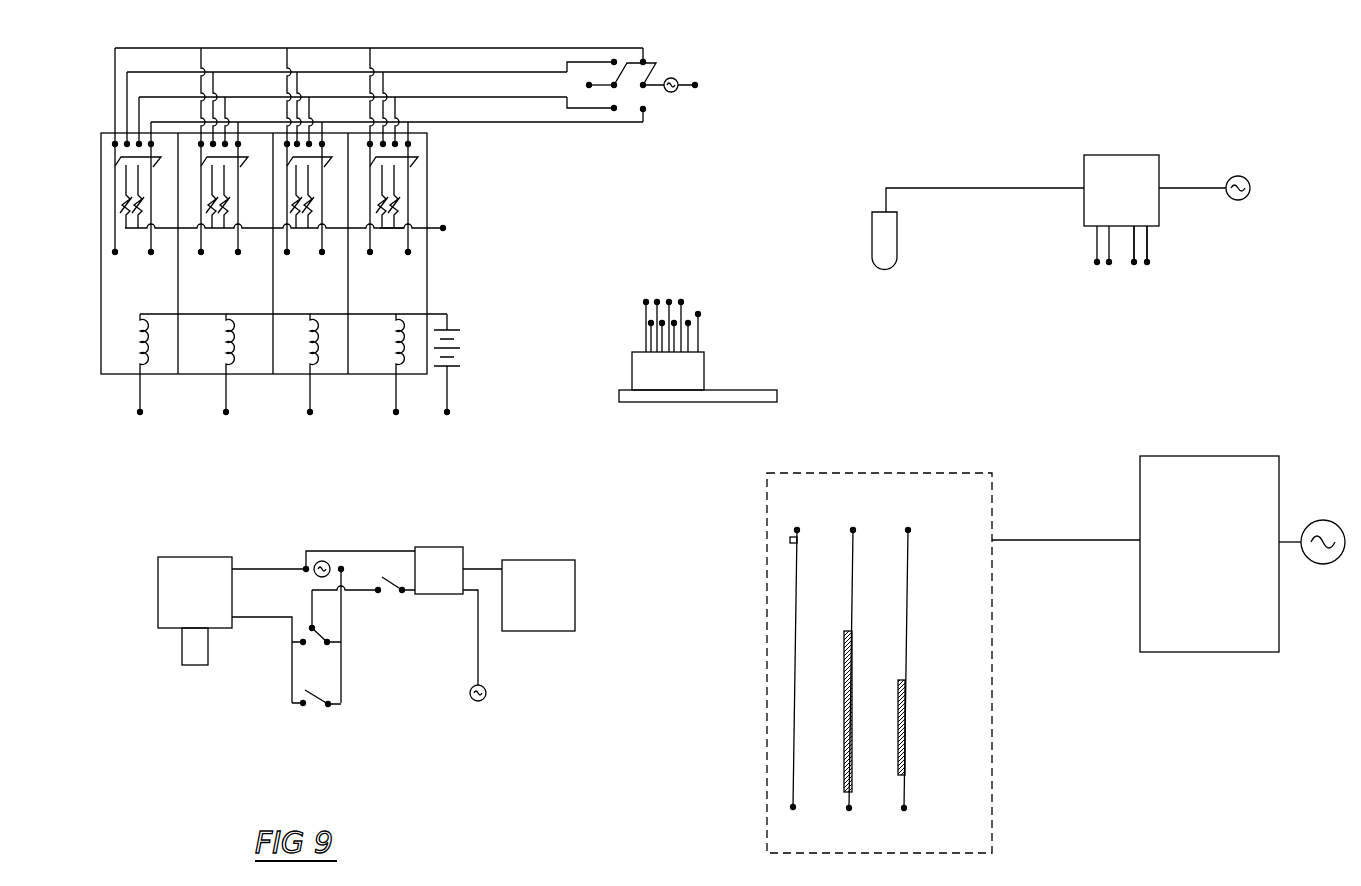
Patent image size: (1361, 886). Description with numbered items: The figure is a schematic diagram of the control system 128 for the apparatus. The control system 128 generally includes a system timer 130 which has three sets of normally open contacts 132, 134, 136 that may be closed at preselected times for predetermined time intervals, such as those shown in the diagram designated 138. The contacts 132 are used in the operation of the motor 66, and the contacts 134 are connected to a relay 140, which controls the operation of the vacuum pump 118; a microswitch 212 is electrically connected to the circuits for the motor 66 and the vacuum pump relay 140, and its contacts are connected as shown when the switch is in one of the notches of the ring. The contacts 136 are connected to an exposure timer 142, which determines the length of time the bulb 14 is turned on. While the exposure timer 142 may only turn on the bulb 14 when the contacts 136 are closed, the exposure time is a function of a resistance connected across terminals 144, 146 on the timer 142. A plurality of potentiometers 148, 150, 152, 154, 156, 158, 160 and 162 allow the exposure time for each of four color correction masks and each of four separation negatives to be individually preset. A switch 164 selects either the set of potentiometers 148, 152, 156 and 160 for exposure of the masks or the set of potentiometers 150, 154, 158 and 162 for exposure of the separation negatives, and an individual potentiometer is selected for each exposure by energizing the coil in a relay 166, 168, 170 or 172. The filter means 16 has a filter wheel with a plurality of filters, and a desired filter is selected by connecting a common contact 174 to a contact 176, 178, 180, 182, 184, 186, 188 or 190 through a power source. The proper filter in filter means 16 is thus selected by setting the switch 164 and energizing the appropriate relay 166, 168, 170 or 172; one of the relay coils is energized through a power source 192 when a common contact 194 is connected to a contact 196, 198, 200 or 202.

The bulb 14 is at (894, 247).
The filter means 16 is at (638, 373).
The motor 66 is at (176, 600).
The vacuum pump 118 is at (545, 620).
The control system 128 is at (514, 407).
The system timer 130 is at (1242, 554).
The contacts 132 is at (316, 708).
The contacts 134 is at (383, 587).
The contacts 136 is at (1144, 264).
The diagram 138 is at (995, 689).
The relay 140 is at (428, 556).
The exposure timer 142 is at (1098, 162).
The terminal 144 is at (449, 228).
The terminal 146 is at (591, 87).
The potentiometer 148 is at (124, 202).
The potentiometer 150 is at (140, 200).
The potentiometer 152 is at (203, 193).
The potentiometer 154 is at (222, 202).
The potentiometer 156 is at (335, 158).
The potentiometer 158 is at (310, 197).
The potentiometer 160 is at (397, 222).
The potentiometer 162 is at (397, 195).
The switch 164 is at (656, 65).
The relay 166 is at (144, 310).
The relay 168 is at (225, 310).
The relay 170 is at (310, 310).
The relay 172 is at (389, 310).
The common contact 174 is at (695, 83).
The contact 176 is at (113, 242).
The contact 178 is at (150, 254).
The contact 180 is at (201, 254).
The contact 182 is at (238, 254).
The contact 184 is at (287, 254).
The contact 186 is at (322, 254).
The contact 188 is at (370, 254).
The contact 190 is at (417, 262).
The power source 192 is at (463, 347).
The common contact 194 is at (448, 414).
The contact 196 is at (150, 423).
The contact 198 is at (224, 413).
The contact 200 is at (308, 408).
The contact 202 is at (394, 413).
The microswitch 212 is at (333, 636).